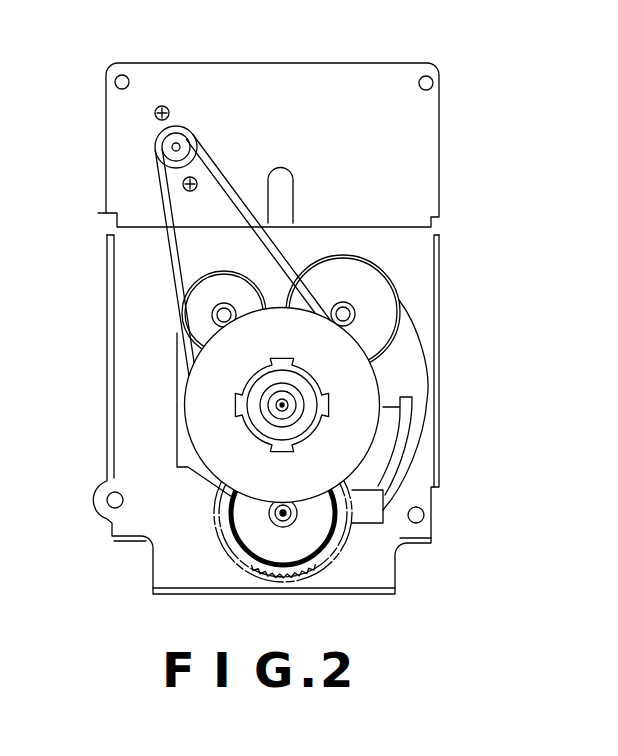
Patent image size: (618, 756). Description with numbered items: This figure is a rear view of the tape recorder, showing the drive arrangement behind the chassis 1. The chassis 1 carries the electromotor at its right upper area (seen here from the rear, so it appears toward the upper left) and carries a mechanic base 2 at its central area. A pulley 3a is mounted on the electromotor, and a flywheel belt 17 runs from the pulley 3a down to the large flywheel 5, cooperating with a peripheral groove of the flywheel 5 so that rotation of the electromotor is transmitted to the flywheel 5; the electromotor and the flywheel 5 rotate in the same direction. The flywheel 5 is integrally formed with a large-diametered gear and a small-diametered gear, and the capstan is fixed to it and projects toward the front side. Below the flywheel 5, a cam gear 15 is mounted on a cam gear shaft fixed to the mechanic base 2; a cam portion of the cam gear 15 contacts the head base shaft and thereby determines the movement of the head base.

The chassis 1 is at (424, 143).
The mechanic base 2 is at (400, 355).
The pulley 3a is at (187, 125).
The flywheel 5 is at (353, 443).
The cam gear 15 is at (339, 553).
The flywheel belt 17 is at (173, 258).